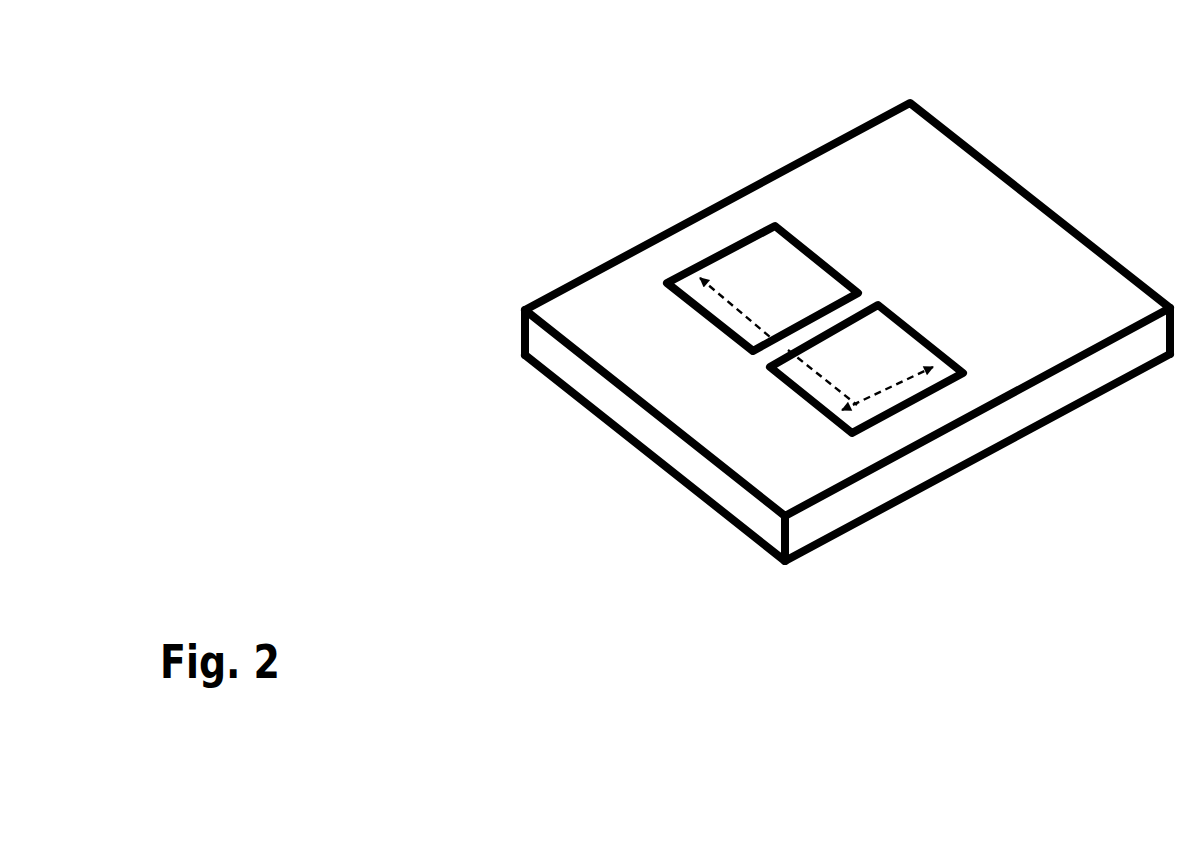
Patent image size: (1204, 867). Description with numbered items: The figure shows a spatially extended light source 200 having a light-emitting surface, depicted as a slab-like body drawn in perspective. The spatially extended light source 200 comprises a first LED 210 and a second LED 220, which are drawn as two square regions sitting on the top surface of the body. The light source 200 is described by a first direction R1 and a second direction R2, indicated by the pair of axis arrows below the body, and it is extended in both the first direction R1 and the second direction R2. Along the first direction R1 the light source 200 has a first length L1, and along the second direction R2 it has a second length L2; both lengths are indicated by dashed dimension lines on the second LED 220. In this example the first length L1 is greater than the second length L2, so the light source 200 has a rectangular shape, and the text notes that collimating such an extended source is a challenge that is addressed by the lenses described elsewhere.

The spatially extended light source 200 is at (1053, 187).
The first LED 210 is at (760, 295).
The second LED 220 is at (873, 366).
The first length L1 is at (832, 386).
The second length L2 is at (905, 390).
The first direction R1 is at (777, 662).
The second direction R2 is at (777, 662).